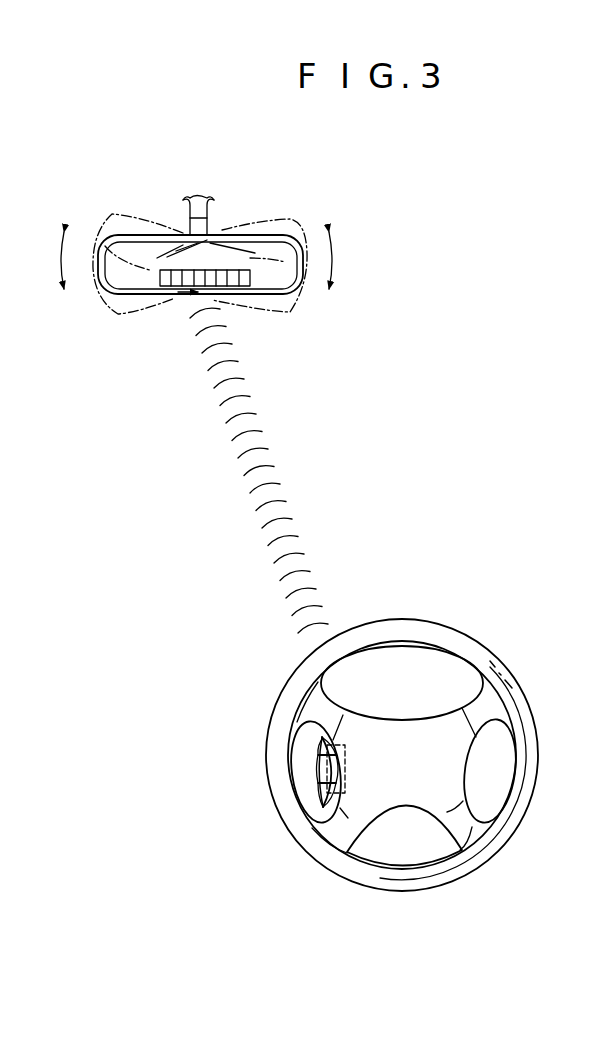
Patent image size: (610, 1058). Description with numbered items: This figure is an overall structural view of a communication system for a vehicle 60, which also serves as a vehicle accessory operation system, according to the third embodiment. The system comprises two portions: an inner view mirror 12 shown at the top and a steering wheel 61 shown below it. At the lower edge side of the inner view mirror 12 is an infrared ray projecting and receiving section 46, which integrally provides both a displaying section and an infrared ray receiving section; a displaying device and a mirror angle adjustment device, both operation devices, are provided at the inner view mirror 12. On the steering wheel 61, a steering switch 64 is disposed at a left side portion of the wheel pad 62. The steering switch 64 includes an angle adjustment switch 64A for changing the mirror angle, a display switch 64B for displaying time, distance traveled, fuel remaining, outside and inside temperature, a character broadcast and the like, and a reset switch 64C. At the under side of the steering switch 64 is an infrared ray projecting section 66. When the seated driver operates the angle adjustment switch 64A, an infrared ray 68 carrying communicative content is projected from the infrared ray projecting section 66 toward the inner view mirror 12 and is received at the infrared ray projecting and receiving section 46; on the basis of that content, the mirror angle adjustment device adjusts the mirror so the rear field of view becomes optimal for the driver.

The inner view mirror 12 is at (272, 234).
The infrared ray projecting and receiving section 46 is at (250, 277).
The infrared ray 68 is at (270, 491).
The communication system for a vehicle 60 is at (446, 455).
The steering wheel 61 is at (497, 655).
The wheel pad 62 is at (431, 734).
The steering switch 64 is at (210, 795).
The angle adjustment switch 64A is at (318, 750).
The display switch 64B is at (322, 797).
The reset switch 64C is at (320, 773).
The infrared ray projecting section 66 is at (345, 767).